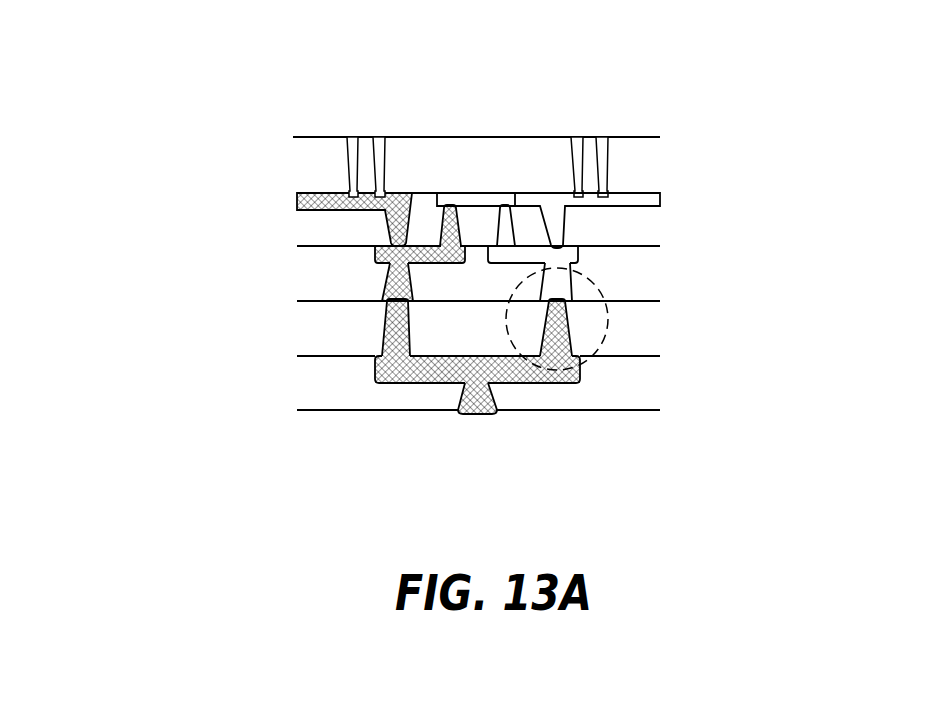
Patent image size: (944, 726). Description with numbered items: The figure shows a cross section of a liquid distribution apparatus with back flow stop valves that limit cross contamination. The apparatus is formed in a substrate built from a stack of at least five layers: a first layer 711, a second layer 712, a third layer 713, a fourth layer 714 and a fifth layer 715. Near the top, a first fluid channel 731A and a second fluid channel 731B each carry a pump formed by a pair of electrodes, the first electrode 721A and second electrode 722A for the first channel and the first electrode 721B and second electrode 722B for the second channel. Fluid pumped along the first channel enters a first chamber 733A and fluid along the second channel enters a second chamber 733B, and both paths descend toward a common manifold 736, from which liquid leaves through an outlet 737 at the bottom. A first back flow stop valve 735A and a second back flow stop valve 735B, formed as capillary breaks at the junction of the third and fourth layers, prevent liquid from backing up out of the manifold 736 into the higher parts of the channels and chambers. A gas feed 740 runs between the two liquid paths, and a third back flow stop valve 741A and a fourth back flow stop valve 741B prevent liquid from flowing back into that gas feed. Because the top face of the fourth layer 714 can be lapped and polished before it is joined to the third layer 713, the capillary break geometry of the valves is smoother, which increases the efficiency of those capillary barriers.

The first layer 711 is at (640, 165).
The second layer 712 is at (652, 228).
The third layer 713 is at (650, 283).
The fourth layer 714 is at (655, 340).
The fifth layer 715 is at (653, 383).
The first electrode 721A is at (352, 137).
The second electrode 722A is at (382, 137).
The first electrode 721B is at (578, 137).
The second electrode 722B is at (603, 137).
The first fluid channel 731A is at (297, 200).
The second fluid channel 731B is at (650, 202).
The first chamber 733A is at (372, 255).
The second chamber 733B is at (580, 258).
The first back flow stop valve 735A is at (382, 322).
The second back flow stop valve 735B is at (607, 320).
The manifold 736 is at (375, 368).
The outlet 737 is at (462, 417).
The gas feed 740 is at (473, 193).
The third back flow stop valve 741A is at (443, 218).
The fourth back flow stop valve 741B is at (512, 222).